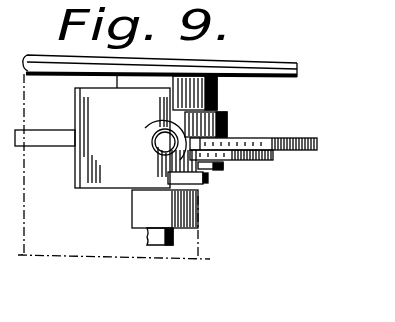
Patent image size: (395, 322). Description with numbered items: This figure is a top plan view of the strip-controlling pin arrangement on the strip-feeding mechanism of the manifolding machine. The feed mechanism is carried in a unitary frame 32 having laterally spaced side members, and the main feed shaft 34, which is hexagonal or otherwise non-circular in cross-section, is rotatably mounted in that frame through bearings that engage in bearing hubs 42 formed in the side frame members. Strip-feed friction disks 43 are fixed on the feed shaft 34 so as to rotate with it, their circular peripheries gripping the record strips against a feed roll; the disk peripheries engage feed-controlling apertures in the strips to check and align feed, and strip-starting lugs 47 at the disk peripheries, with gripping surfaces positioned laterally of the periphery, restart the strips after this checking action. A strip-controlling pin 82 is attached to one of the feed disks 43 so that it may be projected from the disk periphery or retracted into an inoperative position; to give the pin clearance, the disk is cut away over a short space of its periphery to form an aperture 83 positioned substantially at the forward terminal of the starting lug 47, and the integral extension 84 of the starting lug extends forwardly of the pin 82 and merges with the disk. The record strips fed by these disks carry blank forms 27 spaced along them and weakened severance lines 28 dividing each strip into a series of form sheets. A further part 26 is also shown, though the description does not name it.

The weakened severance lines 28 is at (127, 178).
The unitary frame 32 is at (309, 61).
The bearing hubs 42 is at (217, 92).
The strip-feed friction disks 43 is at (53, 141).
The strip-starting lugs 47 is at (100, 186).
The aperture 83 is at (148, 140).
The strip-controlling pin 82 is at (158, 146).
The integral extension 84 is at (207, 181).
The slide 26 is at (221, 168).
The blank forms 27 is at (272, 159).
The main feed shaft 34 is at (167, 246).